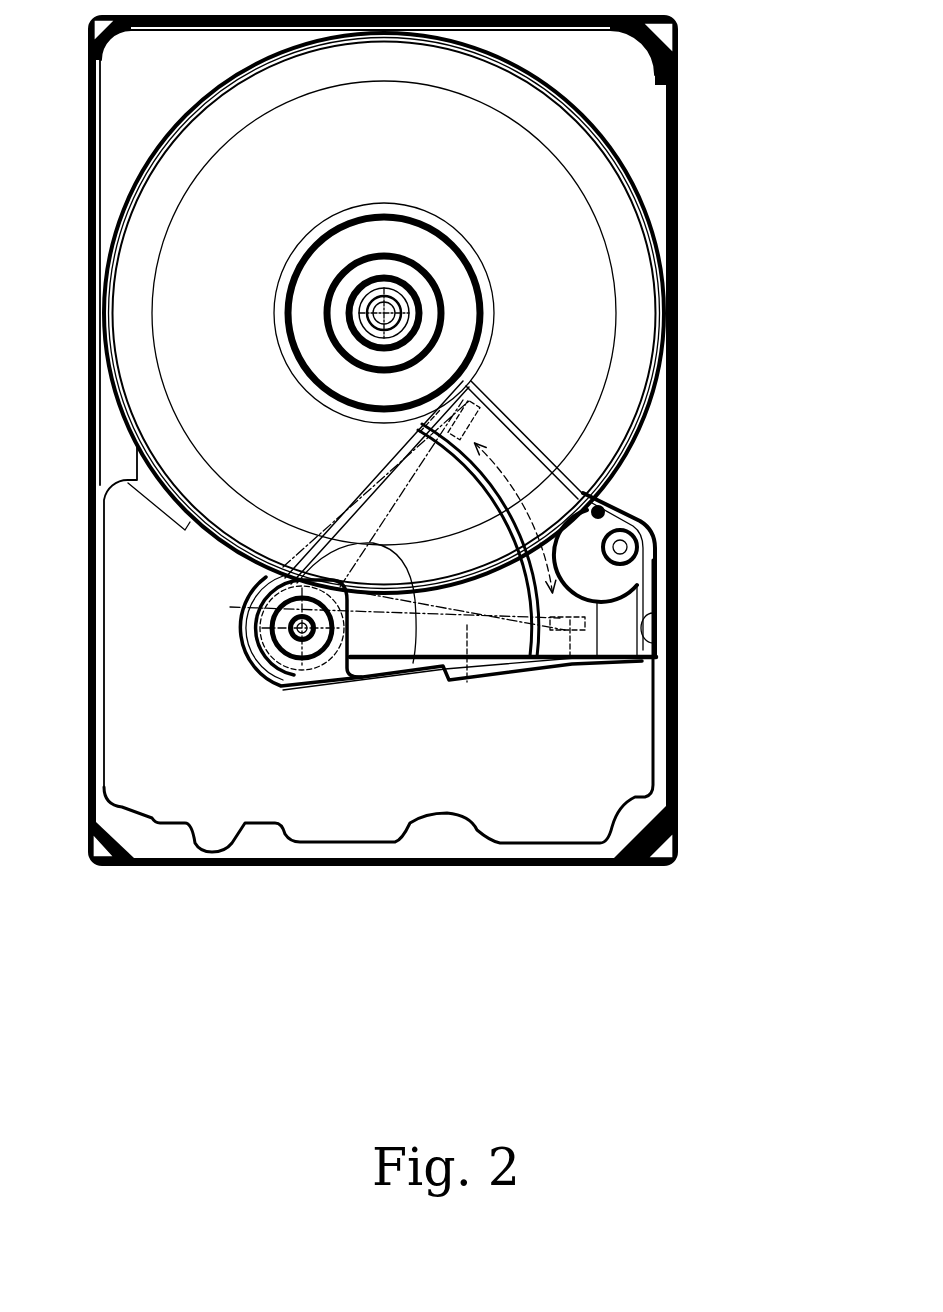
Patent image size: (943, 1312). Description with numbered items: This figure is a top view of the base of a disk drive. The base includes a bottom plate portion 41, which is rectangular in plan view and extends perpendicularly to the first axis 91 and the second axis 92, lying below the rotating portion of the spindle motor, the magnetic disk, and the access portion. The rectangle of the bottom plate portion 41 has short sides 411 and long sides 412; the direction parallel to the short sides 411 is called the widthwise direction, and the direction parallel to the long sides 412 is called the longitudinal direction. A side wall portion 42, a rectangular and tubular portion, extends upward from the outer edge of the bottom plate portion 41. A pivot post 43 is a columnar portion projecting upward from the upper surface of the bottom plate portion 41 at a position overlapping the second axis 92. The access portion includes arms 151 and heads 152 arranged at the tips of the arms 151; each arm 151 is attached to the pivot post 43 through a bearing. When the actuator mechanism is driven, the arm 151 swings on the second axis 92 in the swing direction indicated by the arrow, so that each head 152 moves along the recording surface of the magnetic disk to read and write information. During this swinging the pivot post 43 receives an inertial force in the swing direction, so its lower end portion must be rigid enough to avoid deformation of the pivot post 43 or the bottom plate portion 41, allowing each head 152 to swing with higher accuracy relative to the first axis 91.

The bottom plate portion 41 is at (363, 758).
The short sides 411 is at (237, 868).
The long sides 412 is at (683, 183).
The side wall portion 42 is at (648, 460).
The pivot post 43 is at (287, 692).
The first axis 91 is at (425, 282).
The second axis 92 is at (270, 620).
The arms 151 is at (470, 630).
The heads 152 is at (568, 632).